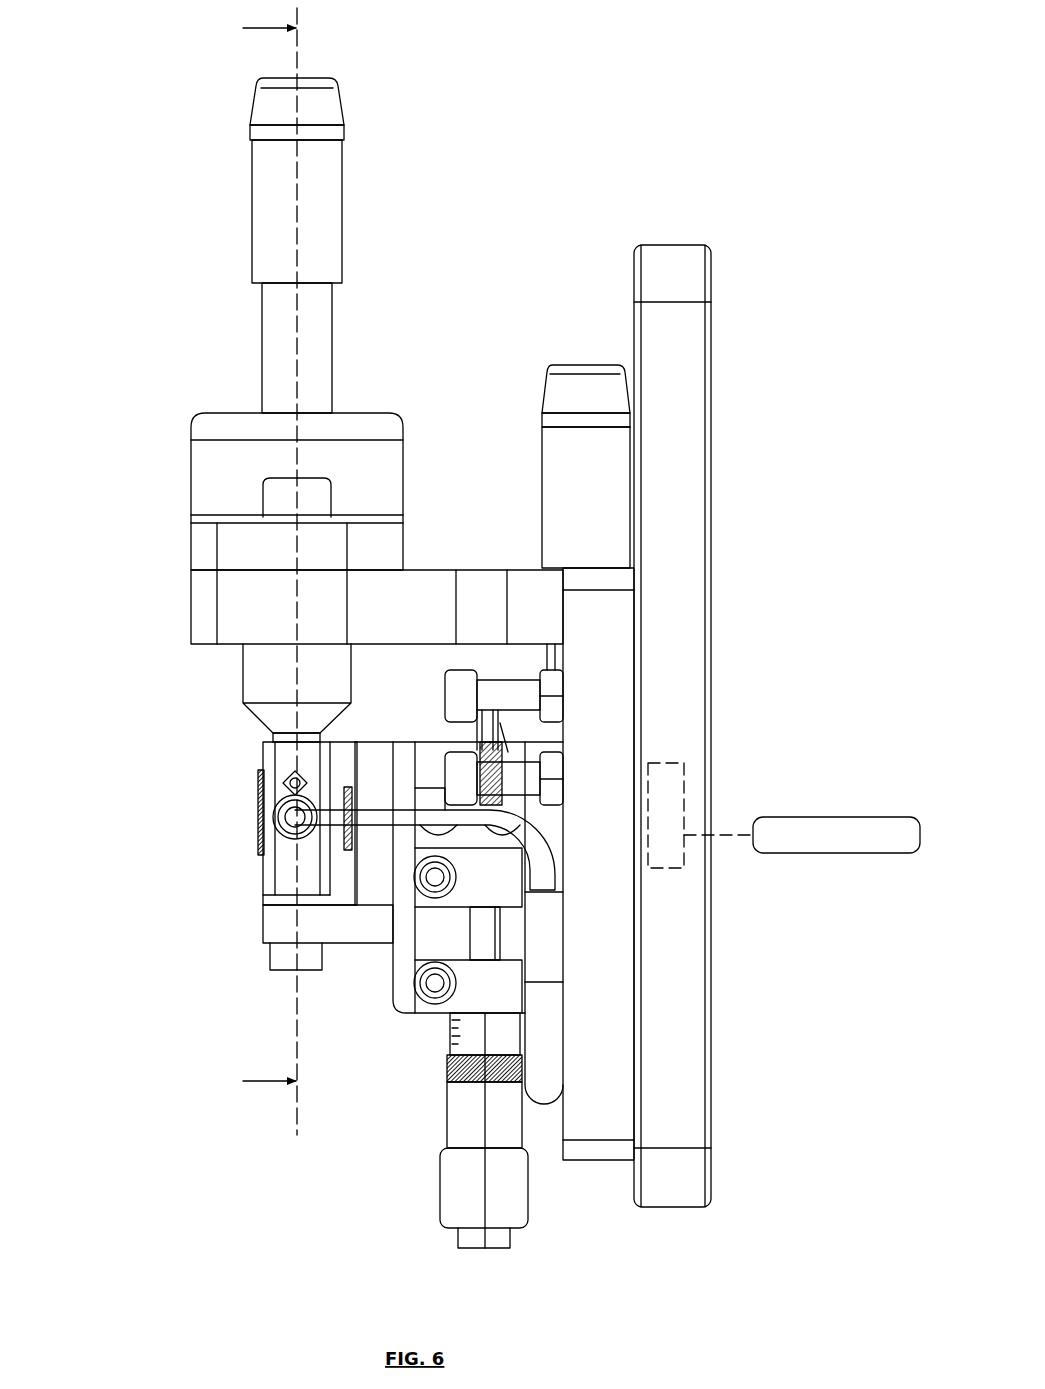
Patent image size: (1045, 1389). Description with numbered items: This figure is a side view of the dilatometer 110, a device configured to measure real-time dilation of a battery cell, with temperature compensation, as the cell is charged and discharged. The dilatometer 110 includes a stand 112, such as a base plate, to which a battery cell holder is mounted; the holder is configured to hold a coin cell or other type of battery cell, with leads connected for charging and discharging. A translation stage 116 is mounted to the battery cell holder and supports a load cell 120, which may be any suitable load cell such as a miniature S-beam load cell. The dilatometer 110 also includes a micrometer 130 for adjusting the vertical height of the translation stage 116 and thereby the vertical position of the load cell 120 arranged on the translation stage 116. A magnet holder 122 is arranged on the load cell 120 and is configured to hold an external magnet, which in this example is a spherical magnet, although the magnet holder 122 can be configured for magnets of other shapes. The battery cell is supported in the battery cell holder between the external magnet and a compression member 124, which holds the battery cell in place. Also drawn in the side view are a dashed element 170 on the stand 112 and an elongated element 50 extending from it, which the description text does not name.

The dilatometer 110 is at (157, 44).
The compression member 124 is at (252, 167).
The magnet holder 122 is at (262, 688).
The load cell 120 is at (297, 868).
The translation stage 116 is at (272, 922).
The micrometer 130 is at (502, 1214).
The stand 112 is at (683, 432).
The sensor 170 is at (684, 782).
The sample 50 is at (843, 816).